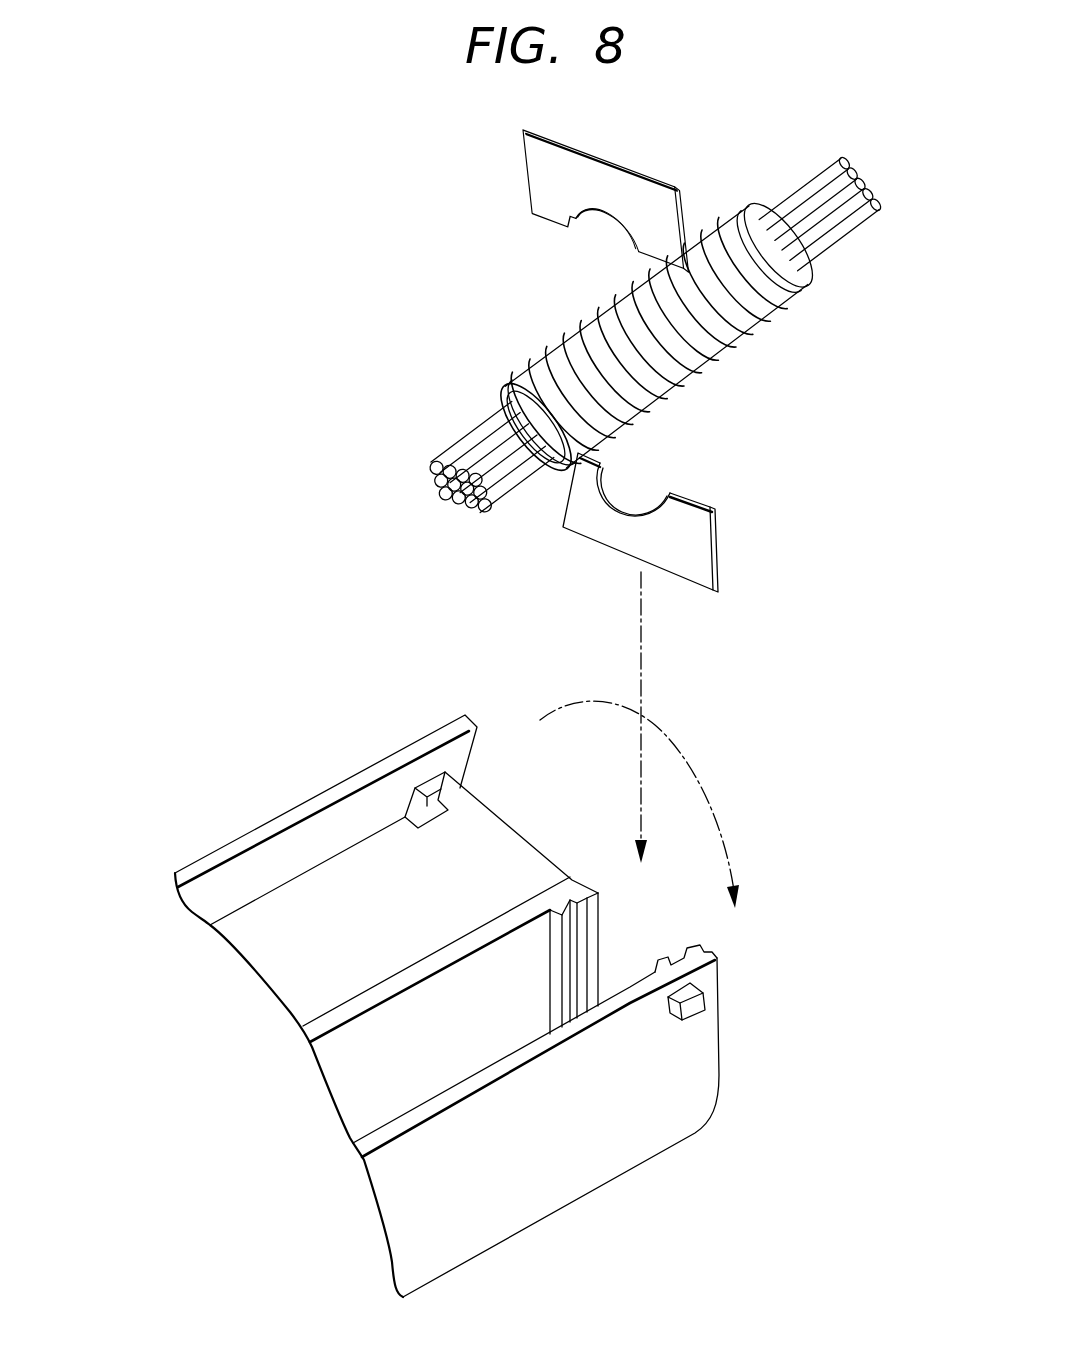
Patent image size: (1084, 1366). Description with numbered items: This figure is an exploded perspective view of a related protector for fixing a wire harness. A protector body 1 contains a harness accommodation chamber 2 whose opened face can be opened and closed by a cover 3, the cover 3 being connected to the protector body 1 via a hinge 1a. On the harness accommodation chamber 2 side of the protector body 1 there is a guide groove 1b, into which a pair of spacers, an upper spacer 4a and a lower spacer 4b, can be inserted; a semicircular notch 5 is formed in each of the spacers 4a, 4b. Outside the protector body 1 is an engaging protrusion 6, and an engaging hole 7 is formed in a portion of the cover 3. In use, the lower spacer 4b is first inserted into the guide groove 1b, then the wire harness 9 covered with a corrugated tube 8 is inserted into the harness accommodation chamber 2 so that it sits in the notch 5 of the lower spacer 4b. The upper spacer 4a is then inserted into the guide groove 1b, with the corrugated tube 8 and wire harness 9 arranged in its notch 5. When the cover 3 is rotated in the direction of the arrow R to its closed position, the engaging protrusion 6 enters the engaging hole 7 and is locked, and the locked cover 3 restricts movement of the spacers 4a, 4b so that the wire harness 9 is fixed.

The protector body 1 is at (608, 1168).
The hinge 1a is at (337, 1007).
The guide groove 1b is at (580, 920).
The harness accommodation chamber 2 is at (360, 1108).
The cover 3 is at (263, 947).
The upper spacer 4a is at (532, 172).
The lower spacer 4b is at (700, 538).
The semicircular notch 5 is at (600, 210).
The engaging protrusion 6 is at (697, 1003).
The engaging hole 7 is at (437, 792).
The corrugated tube 8 is at (727, 327).
The wire harness 9 is at (835, 237).
The arrow R is at (698, 780).